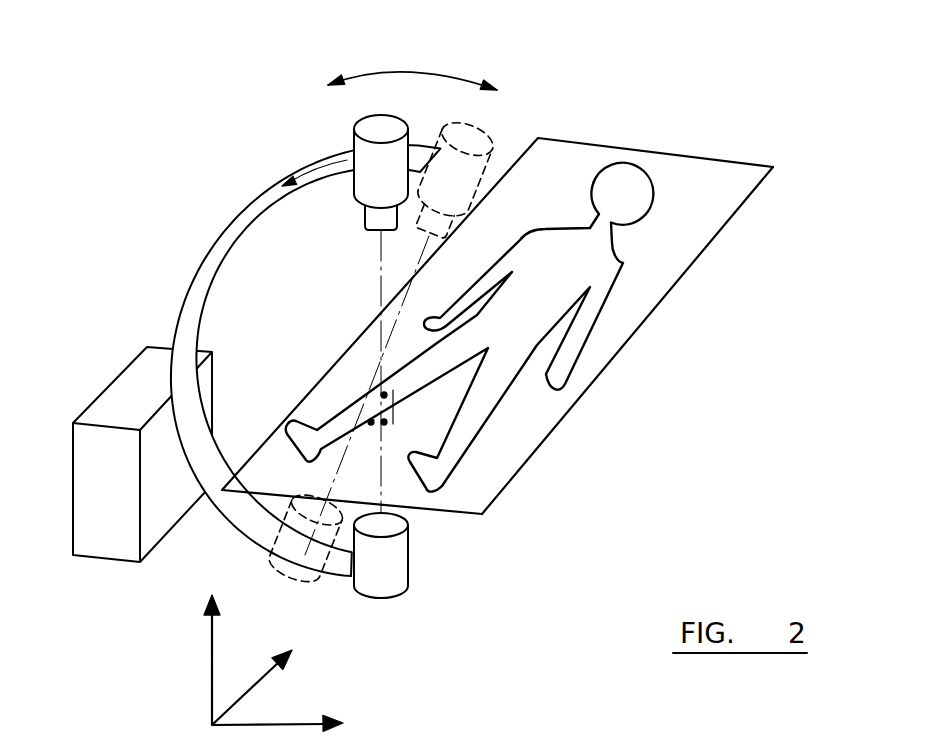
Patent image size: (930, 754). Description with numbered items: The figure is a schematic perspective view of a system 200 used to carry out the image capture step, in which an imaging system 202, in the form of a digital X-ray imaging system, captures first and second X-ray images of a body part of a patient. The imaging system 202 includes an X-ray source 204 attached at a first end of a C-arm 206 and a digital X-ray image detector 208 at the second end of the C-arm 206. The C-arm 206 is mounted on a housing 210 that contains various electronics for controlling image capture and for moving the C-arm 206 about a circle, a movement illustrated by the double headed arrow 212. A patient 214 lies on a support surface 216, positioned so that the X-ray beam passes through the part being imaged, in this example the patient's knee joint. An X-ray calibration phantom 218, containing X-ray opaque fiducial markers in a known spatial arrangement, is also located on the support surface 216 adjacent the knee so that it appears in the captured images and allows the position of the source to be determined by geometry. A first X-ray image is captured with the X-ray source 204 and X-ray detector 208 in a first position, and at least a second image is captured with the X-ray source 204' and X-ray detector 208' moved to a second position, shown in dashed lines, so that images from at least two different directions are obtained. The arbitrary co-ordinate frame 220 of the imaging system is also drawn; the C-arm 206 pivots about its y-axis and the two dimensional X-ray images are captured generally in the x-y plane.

The system 200 is at (700, 97).
The imaging system 202 is at (213, 197).
The X-ray source 204 is at (322, 166).
The X-ray source in second position 204' is at (489, 155).
The C-arm 206 is at (202, 273).
The digital X-ray image detector 208 is at (420, 577).
The X-ray detector in second position 208' is at (328, 581).
The housing 210 is at (137, 397).
The double headed arrow 212 is at (422, 72).
The patient 214 is at (673, 183).
The support surface 216 is at (683, 283).
The X-ray calibration phantom 218 is at (403, 407).
The co-ordinate frame 220 is at (188, 657).